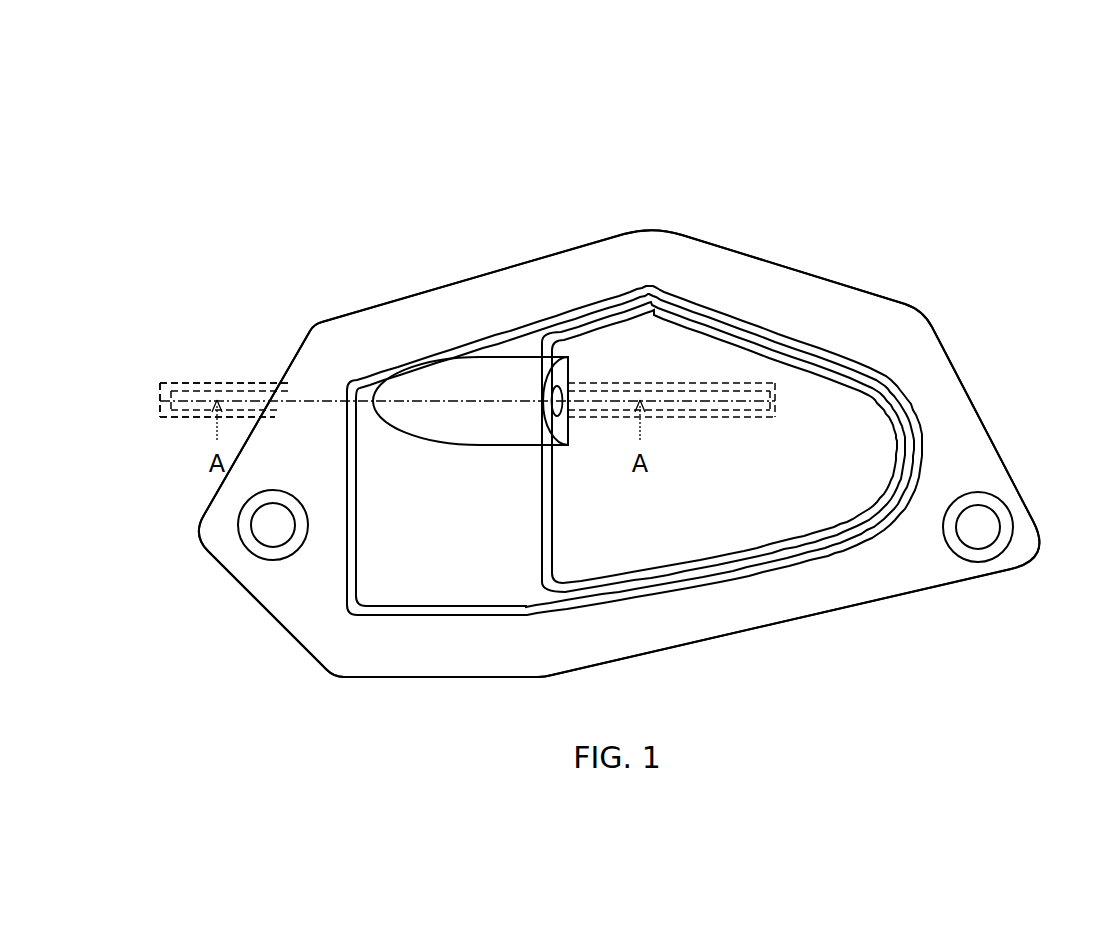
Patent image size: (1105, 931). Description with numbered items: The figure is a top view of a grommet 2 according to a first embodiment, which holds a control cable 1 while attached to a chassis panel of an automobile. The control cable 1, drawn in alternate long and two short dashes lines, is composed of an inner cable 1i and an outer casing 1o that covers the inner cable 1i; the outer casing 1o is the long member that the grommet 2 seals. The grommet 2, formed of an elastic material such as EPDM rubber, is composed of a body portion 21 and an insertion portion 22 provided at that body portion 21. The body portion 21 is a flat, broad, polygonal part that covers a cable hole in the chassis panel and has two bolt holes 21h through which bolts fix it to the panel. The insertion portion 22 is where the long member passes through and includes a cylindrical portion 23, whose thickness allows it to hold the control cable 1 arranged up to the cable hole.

The control cable 1 is at (197, 353).
The inner cable 1i is at (176, 383).
The outer casing 1o is at (243, 383).
The grommet 2 is at (904, 217).
The body portion 21 is at (786, 255).
The bolt holes 21h is at (262, 548).
The insertion portion 22 is at (416, 449).
The cylindrical portion 23 is at (490, 447).